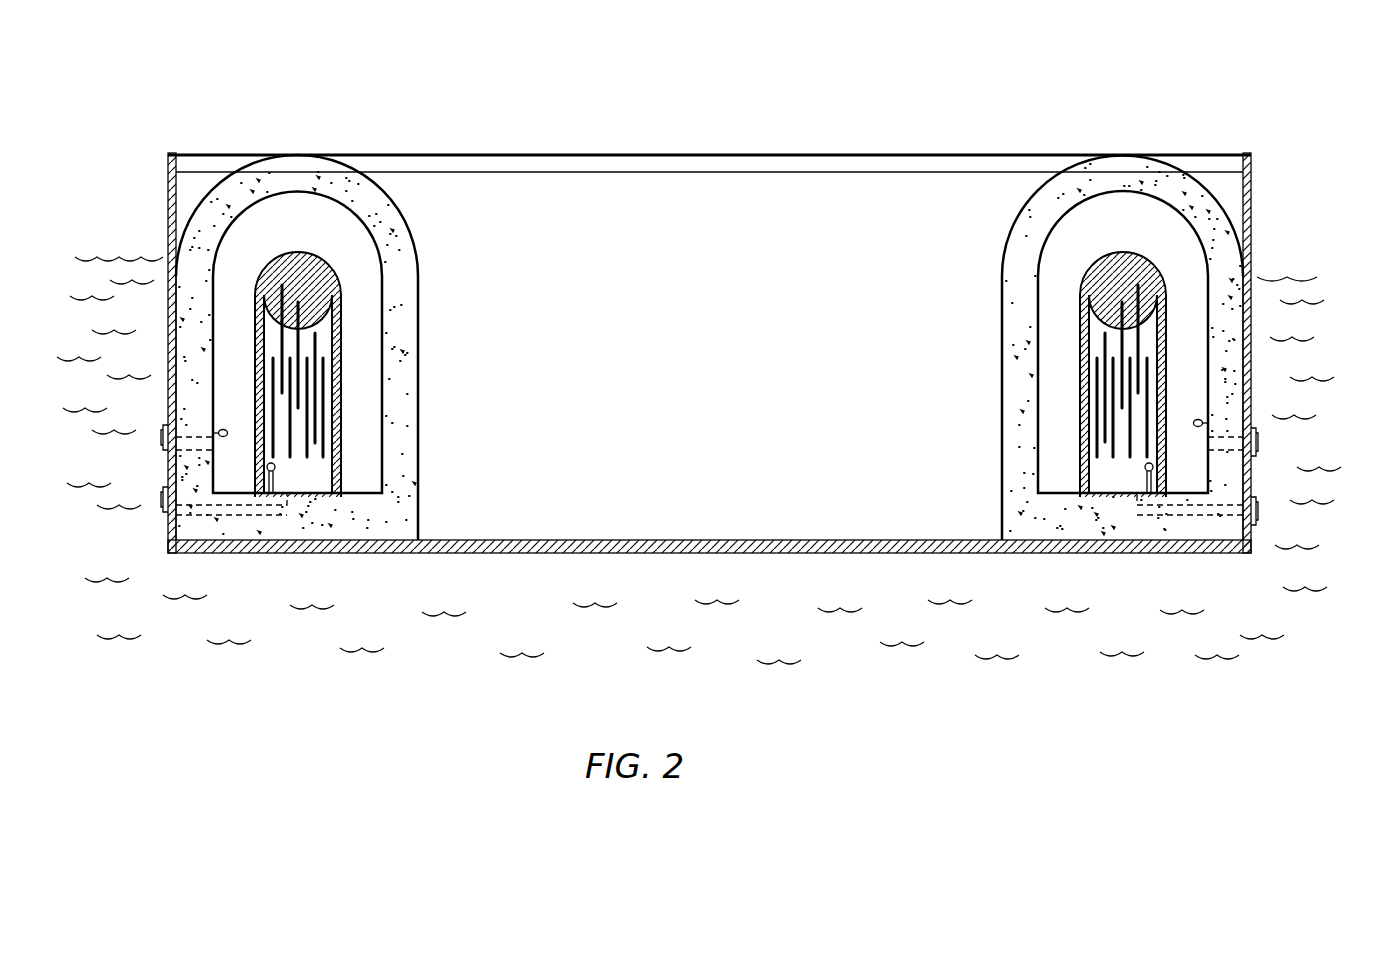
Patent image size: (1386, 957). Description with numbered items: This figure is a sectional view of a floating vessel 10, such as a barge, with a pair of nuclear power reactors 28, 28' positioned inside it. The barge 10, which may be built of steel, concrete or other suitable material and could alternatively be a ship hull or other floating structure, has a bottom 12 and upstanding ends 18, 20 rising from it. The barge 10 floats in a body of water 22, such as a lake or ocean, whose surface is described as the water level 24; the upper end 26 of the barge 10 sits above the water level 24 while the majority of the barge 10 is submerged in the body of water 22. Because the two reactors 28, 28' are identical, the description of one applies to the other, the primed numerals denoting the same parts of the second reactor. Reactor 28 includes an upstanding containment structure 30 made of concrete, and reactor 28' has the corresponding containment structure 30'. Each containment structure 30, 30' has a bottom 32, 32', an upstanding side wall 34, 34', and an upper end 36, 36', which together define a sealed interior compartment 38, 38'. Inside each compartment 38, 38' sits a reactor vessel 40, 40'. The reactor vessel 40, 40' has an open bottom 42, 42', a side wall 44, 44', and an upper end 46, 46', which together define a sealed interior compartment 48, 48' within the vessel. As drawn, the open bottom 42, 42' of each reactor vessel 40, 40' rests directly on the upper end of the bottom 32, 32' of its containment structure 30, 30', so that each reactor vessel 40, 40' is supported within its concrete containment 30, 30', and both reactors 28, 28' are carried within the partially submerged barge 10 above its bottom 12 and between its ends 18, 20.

The floating vessel 10 is at (972, 141).
The bottom 12 is at (847, 545).
The upstanding end 18 is at (168, 192).
The upstanding end 20 is at (1251, 468).
The body of water 22 is at (827, 648).
The water level 24 is at (1285, 275).
The upper end 26 is at (221, 153).
The nuclear power reactor 28 is at (378, 387).
The nuclear power reactor 28' is at (1050, 407).
The containment structure 30 is at (297, 156).
The containment structure 30' is at (1122, 160).
The bottom 32 is at (297, 403).
The bottom 32' is at (1123, 401).
The side wall 34 is at (468, 408).
The side wall 34' is at (962, 408).
The upper end 36 is at (320, 169).
The upper end 36' is at (1059, 228).
The sealed interior compartment 38 is at (326, 336).
The sealed interior compartment 38' is at (1179, 299).
The reactor vessel 40 is at (394, 400).
The reactor vessel 40' is at (1224, 382).
The open bottom 42 is at (340, 493).
The open bottom 42' is at (1121, 534).
The side wall 44 is at (416, 396).
The side wall 44' is at (1254, 396).
The upper end 46 is at (374, 351).
The upper end 46' is at (1207, 331).
The sealed interior compartment 48 is at (383, 364).
The sealed interior compartment 48' is at (1031, 330).